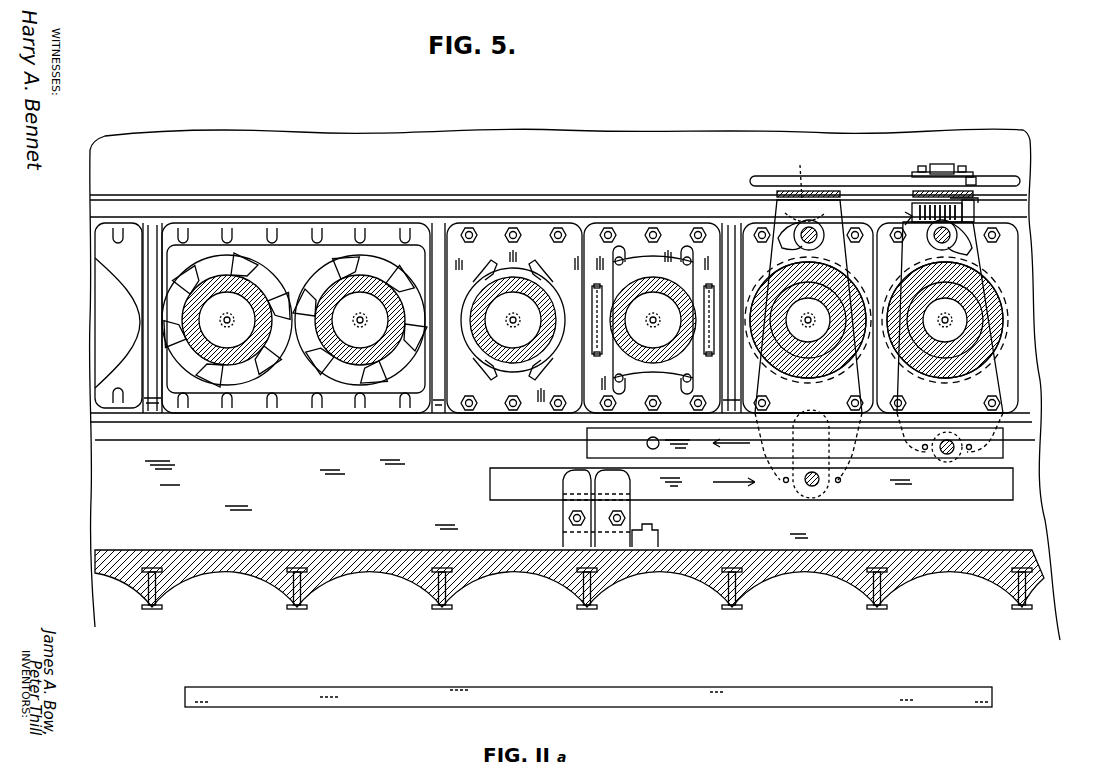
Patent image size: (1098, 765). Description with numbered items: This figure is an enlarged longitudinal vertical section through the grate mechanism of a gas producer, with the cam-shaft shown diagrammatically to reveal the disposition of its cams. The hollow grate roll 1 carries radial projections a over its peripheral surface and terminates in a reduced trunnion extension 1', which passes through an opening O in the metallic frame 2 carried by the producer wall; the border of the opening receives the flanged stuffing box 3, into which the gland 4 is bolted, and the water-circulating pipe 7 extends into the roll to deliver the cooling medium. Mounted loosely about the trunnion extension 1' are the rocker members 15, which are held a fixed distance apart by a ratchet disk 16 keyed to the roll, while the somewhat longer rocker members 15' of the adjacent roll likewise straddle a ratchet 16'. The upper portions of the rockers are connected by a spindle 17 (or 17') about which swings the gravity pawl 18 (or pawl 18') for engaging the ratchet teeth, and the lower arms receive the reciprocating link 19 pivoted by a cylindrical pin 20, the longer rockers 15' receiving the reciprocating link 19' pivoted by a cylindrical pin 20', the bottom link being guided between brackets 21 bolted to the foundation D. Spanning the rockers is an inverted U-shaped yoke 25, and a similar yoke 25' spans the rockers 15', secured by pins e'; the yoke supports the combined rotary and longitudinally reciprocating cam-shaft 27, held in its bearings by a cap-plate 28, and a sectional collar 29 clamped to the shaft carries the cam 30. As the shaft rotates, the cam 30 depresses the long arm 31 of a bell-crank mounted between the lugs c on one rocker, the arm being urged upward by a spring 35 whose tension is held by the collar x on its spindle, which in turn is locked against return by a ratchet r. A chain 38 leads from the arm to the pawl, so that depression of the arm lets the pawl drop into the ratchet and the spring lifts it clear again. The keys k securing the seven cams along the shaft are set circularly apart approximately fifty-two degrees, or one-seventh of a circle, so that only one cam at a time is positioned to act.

In FIG. 5, the grate roll 1 is at (580, 323).
In FIG. 5, the trunnion extension 1' is at (643, 361).
In FIG. 5, the metallic frame 2 is at (94, 213).
In FIG. 5, the stuffing box 3 is at (625, 232).
In FIG. 5, the gland 4 is at (678, 255).
In FIG. 5, the water-circulating pipe 7 is at (945, 320).
In FIG. 5, the opening O is at (293, 258).
In FIG. 5, the radial projection a is at (310, 357).
In FIG. 5, the rocker member 15 is at (902, 426).
In FIG. 5, the rocker member 15' is at (861, 432).
In FIG. 5, the ratchet disk 16 is at (976, 337).
In FIG. 5, the ratchet 16' is at (808, 340).
In FIG. 5, the spindle 17 is at (937, 240).
In FIG. 5, the spindle 17' is at (827, 222).
In FIG. 5, the gravity pawl 18 is at (1013, 261).
In FIG. 5, the pawl 18' is at (787, 167).
In FIG. 5, the reciprocating link 19 is at (825, 443).
In FIG. 5, the reciprocating link 19' is at (751, 501).
In FIG. 5, the cylindrical pin 20 is at (947, 484).
In FIG. 5, the cylindrical pin 20' is at (814, 473).
In FIG. 5, the bracket 21 is at (630, 505).
In FIG. 5, the inverted U-shaped yoke 25 is at (930, 168).
In FIG. 5, the yoke 25' is at (812, 169).
In FIG. 5, the cam-shaft 27 is at (757, 177).
In FIG. 11A, the cam-shaft 27 is at (765, 707).
In FIG. 5, the cap-plate 28 is at (968, 170).
In FIG. 5, the sectional collar 29 is at (948, 166).
In FIG. 5, the cam 30 is at (976, 180).
In FIG. 5, the long arm of bell-crank 31 is at (974, 216).
In FIG. 5, the spring 35 is at (905, 230).
In FIG. 5, the chain 38 is at (1000, 236).
In FIG. 5, the lug c is at (975, 205).
In FIG. 5, the collar x is at (912, 212).
In FIG. 5, the ratchet r is at (905, 212).
In FIG. 5, the pin e' is at (805, 171).
In FIG. 5, the foundation D is at (355, 572).
In FIG. 11A, the key k is at (846, 707).